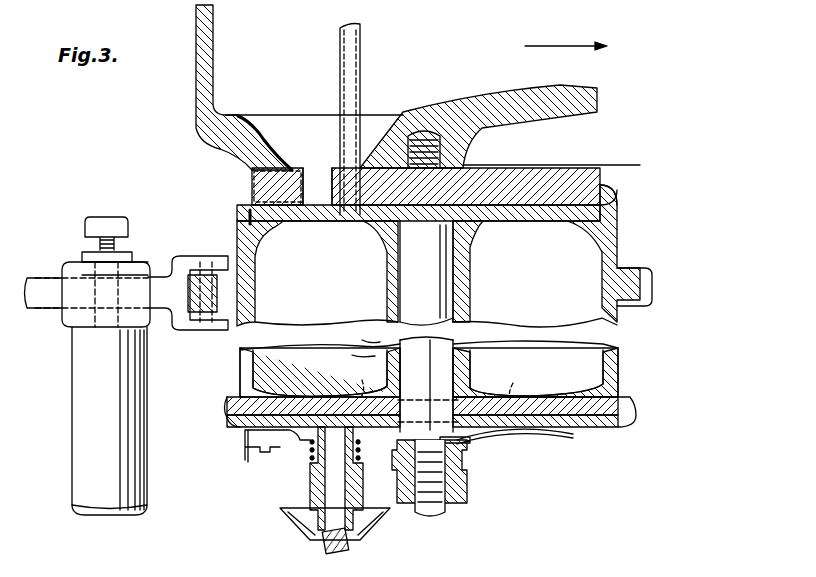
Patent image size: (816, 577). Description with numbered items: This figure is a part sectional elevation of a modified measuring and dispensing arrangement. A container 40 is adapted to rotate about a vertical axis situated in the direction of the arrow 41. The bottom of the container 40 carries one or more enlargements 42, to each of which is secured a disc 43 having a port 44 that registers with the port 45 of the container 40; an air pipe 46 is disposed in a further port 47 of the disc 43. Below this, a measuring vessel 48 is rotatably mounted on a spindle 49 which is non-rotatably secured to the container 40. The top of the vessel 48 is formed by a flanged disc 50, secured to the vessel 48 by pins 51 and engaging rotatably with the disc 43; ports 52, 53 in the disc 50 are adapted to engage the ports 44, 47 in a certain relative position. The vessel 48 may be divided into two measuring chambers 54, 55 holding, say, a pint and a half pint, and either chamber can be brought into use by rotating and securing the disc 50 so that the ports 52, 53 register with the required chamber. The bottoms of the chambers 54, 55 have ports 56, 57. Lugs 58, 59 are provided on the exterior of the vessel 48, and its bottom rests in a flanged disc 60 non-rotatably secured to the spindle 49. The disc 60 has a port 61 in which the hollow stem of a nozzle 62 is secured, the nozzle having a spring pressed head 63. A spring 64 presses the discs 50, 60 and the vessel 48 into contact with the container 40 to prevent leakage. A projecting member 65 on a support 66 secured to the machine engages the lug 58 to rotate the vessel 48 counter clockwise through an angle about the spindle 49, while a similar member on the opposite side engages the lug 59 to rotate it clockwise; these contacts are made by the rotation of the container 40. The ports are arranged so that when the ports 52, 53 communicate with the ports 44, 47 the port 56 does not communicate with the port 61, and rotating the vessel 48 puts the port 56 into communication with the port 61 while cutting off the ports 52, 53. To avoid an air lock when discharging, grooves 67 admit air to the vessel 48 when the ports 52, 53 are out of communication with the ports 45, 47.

The container 40 is at (210, 130).
The arrow 41 is at (578, 42).
The enlargement 42 is at (458, 152).
The disc 43 is at (573, 172).
The port 44 is at (252, 174).
The port 45 is at (314, 176).
The air pipe 46 is at (359, 97).
The port 47 is at (342, 104).
The measuring vessel 48 is at (606, 232).
The spindle 49 is at (429, 281).
The flanged disc 50 is at (615, 206).
The pin 51 is at (240, 218).
The port 52 is at (323, 210).
The port 53 is at (353, 212).
The measuring chamber 54 is at (313, 385).
The measuring chamber 55 is at (535, 384).
The port 56 is at (353, 397).
The port 57 is at (510, 380).
The lug 58 is at (217, 314).
The lug 59 is at (643, 286).
The flanged disc 60 is at (630, 410).
The port 61 is at (335, 470).
The nozzle 62 is at (310, 455).
The spring pressed head 63 is at (378, 520).
The spring 64 is at (520, 440).
The projecting member 65 is at (170, 278).
The support 66 is at (88, 372).
The groove 67 is at (252, 182).